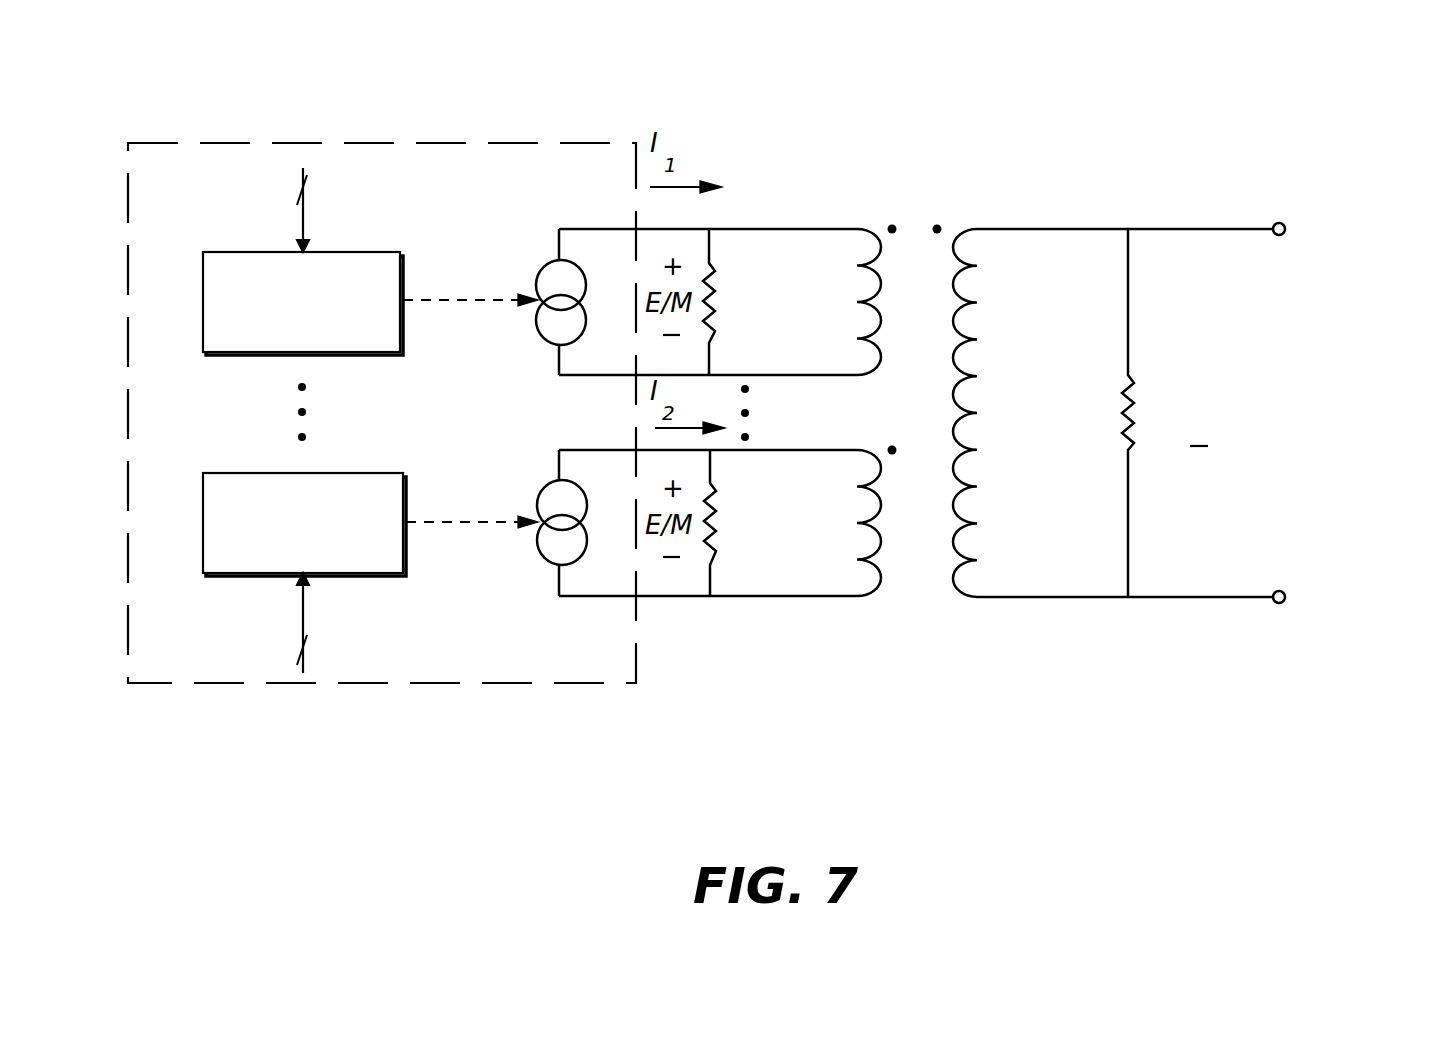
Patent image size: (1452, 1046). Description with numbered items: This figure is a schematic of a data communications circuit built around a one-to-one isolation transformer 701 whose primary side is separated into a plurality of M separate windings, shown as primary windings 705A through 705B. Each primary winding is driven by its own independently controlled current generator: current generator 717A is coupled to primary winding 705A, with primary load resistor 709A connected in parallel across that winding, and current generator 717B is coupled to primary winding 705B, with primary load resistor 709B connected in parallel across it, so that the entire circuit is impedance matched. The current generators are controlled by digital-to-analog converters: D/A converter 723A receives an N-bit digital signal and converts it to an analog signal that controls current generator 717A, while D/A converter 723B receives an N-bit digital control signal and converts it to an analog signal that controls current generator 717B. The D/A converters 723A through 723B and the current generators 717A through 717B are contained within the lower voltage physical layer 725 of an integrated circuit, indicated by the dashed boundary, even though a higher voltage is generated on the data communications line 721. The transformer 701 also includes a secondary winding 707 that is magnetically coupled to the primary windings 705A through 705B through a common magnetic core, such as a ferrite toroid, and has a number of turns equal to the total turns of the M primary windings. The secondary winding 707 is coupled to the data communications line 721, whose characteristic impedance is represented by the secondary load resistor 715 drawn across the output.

The 1:1 isolation transformer 701 is at (908, 630).
The primary winding 705A is at (857, 377).
The primary winding 705B is at (857, 598).
The secondary winding 707 is at (973, 598).
The primary load resistor 709A is at (711, 288).
The primary load resistor 709B is at (712, 510).
The secondary load resistor 715 is at (1124, 412).
The current generator 717A is at (540, 272).
The current generator 717B is at (540, 492).
The data communications line 721 is at (1352, 253).
The D/A converter 723A is at (245, 252).
The D/A converter 723B is at (245, 473).
The lower voltage physical layer 725 is at (467, 142).